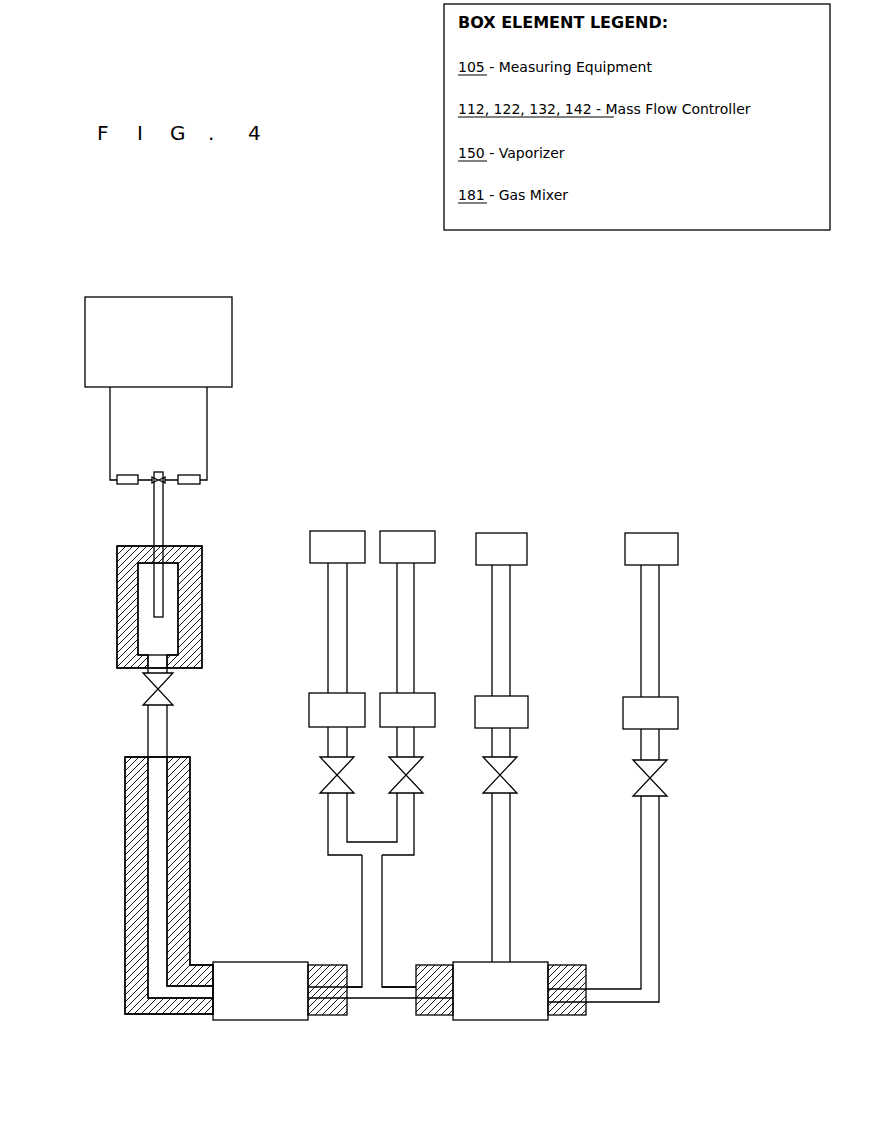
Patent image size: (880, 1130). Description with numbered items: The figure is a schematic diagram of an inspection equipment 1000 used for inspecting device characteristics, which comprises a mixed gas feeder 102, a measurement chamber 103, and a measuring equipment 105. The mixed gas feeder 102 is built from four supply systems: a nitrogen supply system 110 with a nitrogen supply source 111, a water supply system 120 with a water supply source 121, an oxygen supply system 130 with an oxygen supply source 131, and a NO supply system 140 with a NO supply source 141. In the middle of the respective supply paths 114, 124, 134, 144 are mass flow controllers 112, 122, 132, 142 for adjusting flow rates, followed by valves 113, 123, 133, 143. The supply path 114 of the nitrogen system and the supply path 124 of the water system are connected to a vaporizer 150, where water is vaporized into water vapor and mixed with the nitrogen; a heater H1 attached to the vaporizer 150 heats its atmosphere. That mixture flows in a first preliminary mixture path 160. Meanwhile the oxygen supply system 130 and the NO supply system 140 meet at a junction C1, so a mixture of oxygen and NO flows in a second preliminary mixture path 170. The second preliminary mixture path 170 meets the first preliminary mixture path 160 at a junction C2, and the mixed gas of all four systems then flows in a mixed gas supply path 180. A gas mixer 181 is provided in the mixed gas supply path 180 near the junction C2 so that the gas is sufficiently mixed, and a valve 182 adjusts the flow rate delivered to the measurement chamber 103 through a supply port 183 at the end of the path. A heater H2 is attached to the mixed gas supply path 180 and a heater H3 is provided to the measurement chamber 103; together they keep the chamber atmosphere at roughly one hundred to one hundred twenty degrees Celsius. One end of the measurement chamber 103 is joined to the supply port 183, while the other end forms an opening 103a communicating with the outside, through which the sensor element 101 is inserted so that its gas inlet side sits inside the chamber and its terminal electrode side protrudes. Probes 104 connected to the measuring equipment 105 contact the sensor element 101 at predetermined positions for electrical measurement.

The inspection equipment 1000 is at (363, 258).
The sensor element 101 is at (165, 518).
The mixed gas feeder 102 is at (458, 467).
The measurement chamber 103 is at (138, 578).
The opening 103a is at (152, 546).
The probes 104 is at (188, 475).
The measuring equipment 105 is at (85, 343).
The nitrogen supply system 110 is at (660, 731).
The nitrogen supply source 111 is at (678, 547).
The mass flow controller 112 is at (678, 712).
The valve 113 is at (668, 778).
The supply path 114 is at (661, 880).
The water supply system 120 is at (530, 711).
The water supply source 121 is at (528, 547).
The mass flow controller 122 is at (528, 712).
The valve 123 is at (518, 777).
The supply path 124 is at (512, 880).
The oxygen supply system 130 is at (428, 658).
The oxygen supply source 131 is at (435, 545).
The mass flow controller 132 is at (435, 697).
The valve 133 is at (423, 777).
The supply path 134 is at (414, 825).
The NO supply system 140 is at (314, 658).
The NO supply source 141 is at (310, 545).
The mass flow controller 142 is at (309, 712).
The valve 143 is at (320, 777).
The supply path 144 is at (328, 825).
The vaporizer 150 is at (501, 1003).
The first preliminary mixture path 160 is at (400, 985).
The second preliminary mixture path 170 is at (384, 880).
The mixed gas supply path 180 is at (190, 1000).
The gas mixer 181 is at (262, 1003).
The valve 182 is at (143, 689).
The supply port 183 is at (160, 650).
The heater H1 is at (432, 1015).
The heater H2 is at (125, 884).
The heater H3 is at (117, 604).
The junction C1 is at (357, 861).
The junction C2 is at (367, 1010).